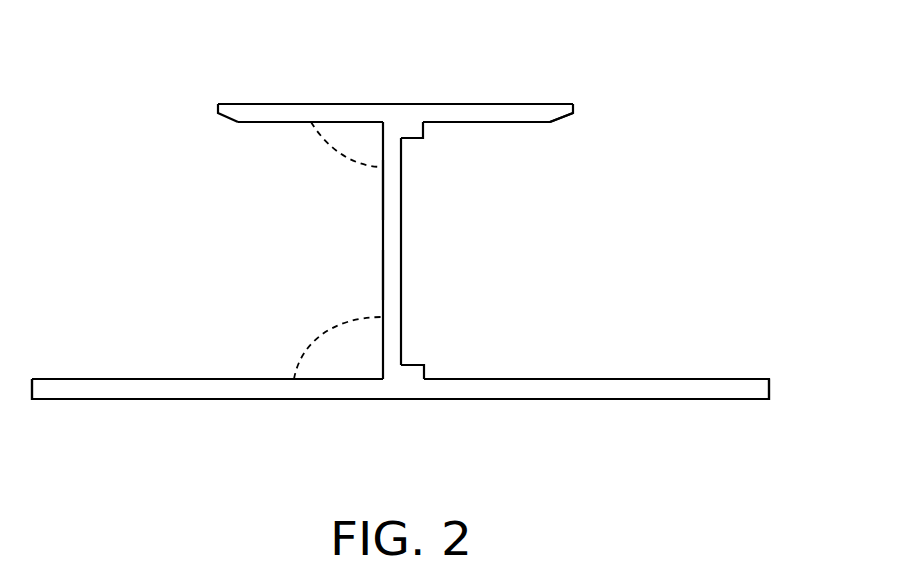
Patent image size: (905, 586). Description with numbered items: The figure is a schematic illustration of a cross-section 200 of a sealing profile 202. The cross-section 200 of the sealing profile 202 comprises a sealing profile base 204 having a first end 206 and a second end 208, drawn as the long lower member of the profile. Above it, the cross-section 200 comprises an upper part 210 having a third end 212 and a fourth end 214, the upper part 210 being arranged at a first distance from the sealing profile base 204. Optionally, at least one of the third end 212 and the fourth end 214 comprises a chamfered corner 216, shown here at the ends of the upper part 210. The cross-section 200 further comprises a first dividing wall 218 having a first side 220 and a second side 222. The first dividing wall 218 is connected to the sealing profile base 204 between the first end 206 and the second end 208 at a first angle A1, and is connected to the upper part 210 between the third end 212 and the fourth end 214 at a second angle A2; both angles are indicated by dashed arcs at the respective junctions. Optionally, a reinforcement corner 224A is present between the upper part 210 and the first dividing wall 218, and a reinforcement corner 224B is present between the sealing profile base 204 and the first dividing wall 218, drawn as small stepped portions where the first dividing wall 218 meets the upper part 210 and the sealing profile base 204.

The cross-section 200 is at (648, 121).
The sealing profile 202 is at (684, 61).
The sealing profile base 204 is at (400, 356).
The first end 206 is at (776, 342).
The second end 208 is at (70, 342).
The upper part 210 is at (395, 78).
The third end 212 is at (568, 73).
The fourth end 214 is at (250, 155).
The chamfered corner 216 is at (571, 160).
The first dividing wall 218 is at (344, 207).
The first side 220 is at (446, 250).
The second side 222 is at (320, 279).
The reinforcement corner 224A is at (440, 69).
The reinforcement corner 224B is at (438, 416).
The first angle A1 is at (314, 396).
The second angle A2 is at (359, 102).